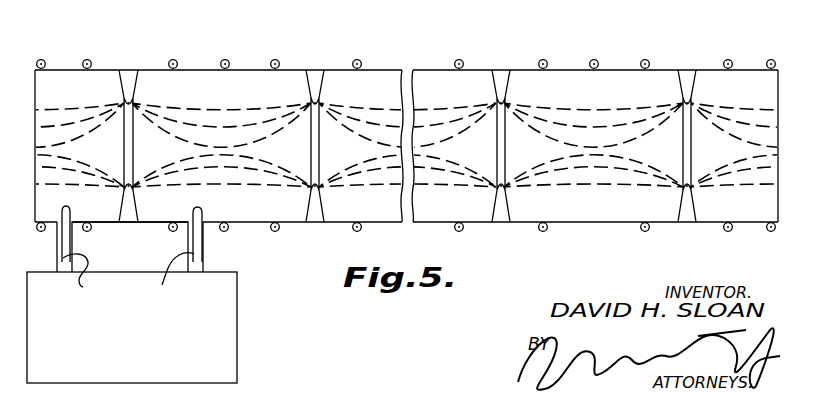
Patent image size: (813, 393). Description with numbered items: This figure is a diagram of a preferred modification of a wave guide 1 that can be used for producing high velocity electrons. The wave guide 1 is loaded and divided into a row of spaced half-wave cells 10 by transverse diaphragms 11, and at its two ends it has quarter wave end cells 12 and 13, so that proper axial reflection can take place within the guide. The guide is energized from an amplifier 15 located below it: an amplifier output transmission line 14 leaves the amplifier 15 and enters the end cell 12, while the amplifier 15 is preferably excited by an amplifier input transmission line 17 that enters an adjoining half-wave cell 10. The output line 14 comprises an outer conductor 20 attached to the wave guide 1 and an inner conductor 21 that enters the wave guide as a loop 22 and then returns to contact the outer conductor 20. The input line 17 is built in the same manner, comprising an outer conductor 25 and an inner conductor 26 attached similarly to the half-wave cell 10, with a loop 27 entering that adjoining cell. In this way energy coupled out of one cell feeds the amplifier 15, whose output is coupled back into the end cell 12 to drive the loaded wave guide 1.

The wave guide 1 is at (382, 71).
The half-wave cells 10 is at (240, 95).
The diaphragms 11 is at (131, 75).
The quarter wave end cell 12 is at (62, 88).
The quarter wave end cell 13 is at (745, 78).
The amplifier output transmission line 14 is at (87, 277).
The amplifier 15 is at (130, 357).
The amplifier input transmission line 17 is at (174, 276).
The outer conductor 20 is at (57, 243).
The inner conductor 21 is at (71, 237).
The loop 22 is at (63, 210).
The outer conductor 25 is at (207, 247).
The inner conductor 26 is at (206, 235).
The loop 27 is at (199, 208).